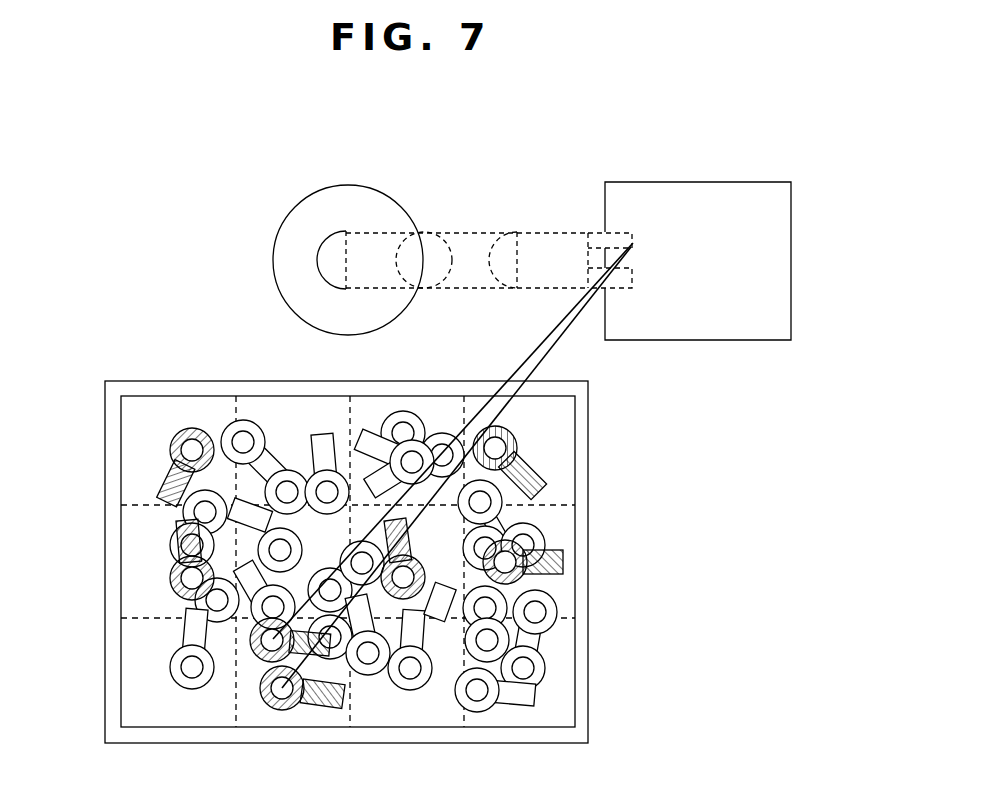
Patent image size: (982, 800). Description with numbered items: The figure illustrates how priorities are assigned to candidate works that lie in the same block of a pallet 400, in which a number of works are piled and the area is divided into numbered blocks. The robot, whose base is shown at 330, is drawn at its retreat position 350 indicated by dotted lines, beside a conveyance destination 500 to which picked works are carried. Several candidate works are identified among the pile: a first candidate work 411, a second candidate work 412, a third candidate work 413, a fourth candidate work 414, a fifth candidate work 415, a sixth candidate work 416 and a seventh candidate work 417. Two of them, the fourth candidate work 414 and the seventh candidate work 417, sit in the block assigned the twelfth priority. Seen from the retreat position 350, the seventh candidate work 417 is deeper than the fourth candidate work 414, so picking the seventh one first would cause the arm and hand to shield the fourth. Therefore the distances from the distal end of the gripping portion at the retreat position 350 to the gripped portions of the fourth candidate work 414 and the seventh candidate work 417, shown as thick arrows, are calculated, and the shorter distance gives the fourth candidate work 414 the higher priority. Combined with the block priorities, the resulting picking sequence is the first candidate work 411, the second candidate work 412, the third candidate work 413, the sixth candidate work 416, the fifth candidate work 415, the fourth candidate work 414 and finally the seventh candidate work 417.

The robot base 330 is at (273, 257).
The retreat position 350 is at (478, 232).
The conveyance destination 500 is at (770, 182).
The pallet 400 is at (151, 381).
The first candidate work 411 is at (540, 482).
The second candidate work 412 is at (565, 565).
The third candidate work 413 is at (418, 588).
The fourth candidate work 414 is at (265, 655).
The fifth candidate work 415 is at (172, 545).
The sixth candidate work 416 is at (170, 450).
The seventh candidate work 417 is at (304, 693).